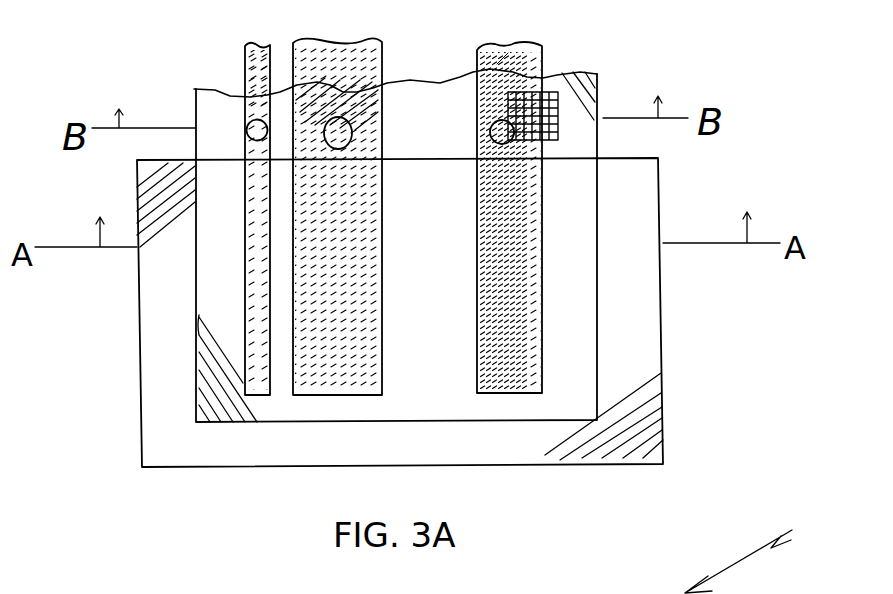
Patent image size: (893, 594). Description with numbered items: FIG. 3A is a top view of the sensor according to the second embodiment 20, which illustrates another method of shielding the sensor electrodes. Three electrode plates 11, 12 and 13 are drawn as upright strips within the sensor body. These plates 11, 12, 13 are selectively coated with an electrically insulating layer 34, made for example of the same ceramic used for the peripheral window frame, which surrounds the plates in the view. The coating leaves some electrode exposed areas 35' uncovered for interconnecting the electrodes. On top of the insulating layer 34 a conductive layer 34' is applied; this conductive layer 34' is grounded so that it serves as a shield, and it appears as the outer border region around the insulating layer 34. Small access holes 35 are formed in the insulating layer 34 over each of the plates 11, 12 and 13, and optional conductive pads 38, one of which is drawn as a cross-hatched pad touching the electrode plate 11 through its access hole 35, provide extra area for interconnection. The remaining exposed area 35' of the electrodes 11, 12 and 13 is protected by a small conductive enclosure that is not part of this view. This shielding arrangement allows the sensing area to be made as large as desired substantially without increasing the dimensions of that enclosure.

The plate 11 is at (533, 282).
The plate 12 is at (405, 282).
The plate 13 is at (258, 290).
The embodiment 20 is at (750, 533).
The electrically insulating layer 34 is at (395, 246).
The conductive layer 34' is at (400, 312).
The access holes 35 is at (381, 74).
The electrode exposed areas 35' is at (542, 33).
The conductive pads 38 is at (557, 107).